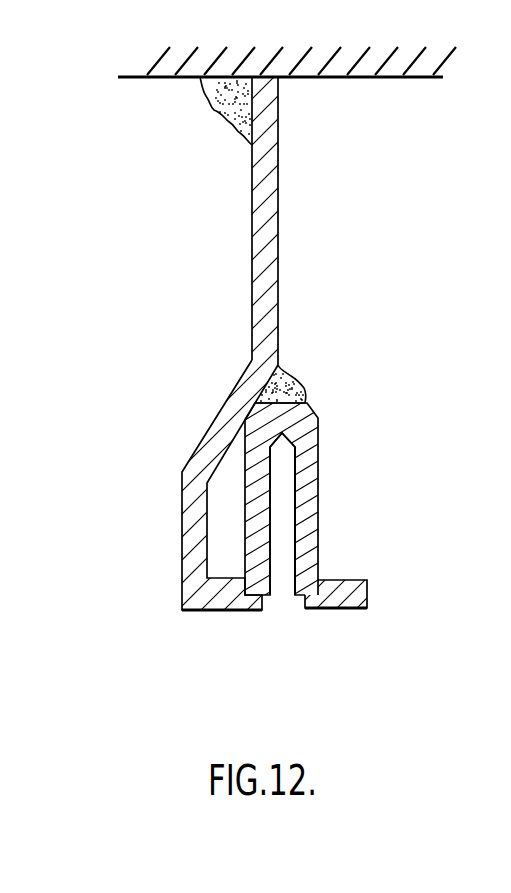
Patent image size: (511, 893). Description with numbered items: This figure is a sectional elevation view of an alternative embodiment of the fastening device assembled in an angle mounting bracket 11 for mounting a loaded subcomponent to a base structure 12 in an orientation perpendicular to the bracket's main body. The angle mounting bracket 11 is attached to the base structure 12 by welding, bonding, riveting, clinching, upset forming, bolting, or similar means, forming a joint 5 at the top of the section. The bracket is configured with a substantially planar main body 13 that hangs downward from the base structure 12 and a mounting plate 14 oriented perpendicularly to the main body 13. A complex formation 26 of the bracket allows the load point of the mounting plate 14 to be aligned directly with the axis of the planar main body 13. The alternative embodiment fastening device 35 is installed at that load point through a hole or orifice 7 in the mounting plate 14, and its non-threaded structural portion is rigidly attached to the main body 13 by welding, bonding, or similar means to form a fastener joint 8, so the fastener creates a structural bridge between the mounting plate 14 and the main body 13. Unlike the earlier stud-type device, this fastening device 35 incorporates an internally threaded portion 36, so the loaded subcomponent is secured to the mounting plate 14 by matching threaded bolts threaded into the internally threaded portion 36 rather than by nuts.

The joint 5 is at (208, 113).
The base structure 12 is at (368, 80).
The angle mounting bracket 11 is at (251, 360).
The main body 13 is at (280, 250).
The fastener joint 8 is at (297, 377).
The complex formation 26 is at (178, 527).
The alternative embodiment fastening device 35 is at (320, 482).
The hole or orifice 7 is at (293, 605).
The internally threaded portion 36 is at (292, 573).
The mounting plate 14 is at (352, 610).